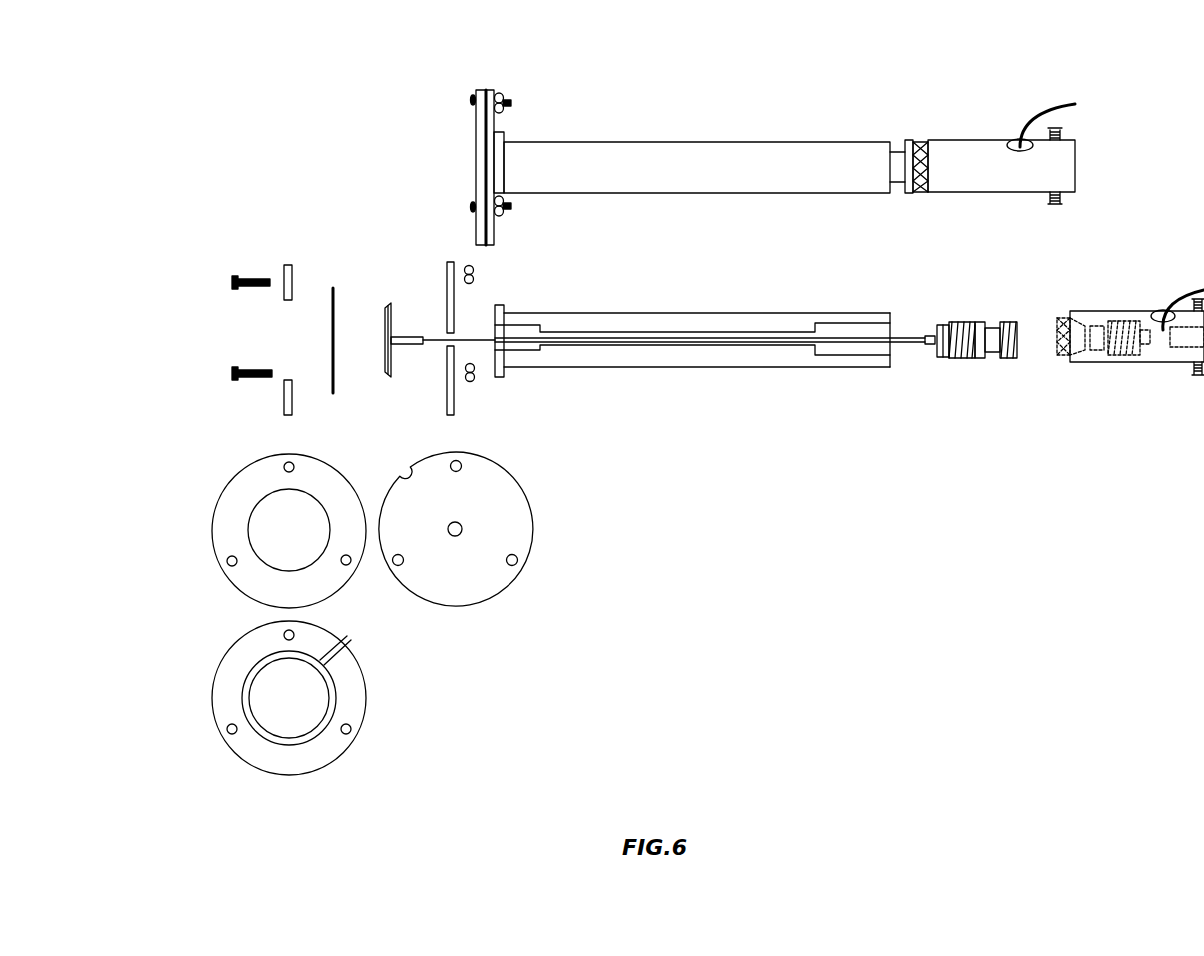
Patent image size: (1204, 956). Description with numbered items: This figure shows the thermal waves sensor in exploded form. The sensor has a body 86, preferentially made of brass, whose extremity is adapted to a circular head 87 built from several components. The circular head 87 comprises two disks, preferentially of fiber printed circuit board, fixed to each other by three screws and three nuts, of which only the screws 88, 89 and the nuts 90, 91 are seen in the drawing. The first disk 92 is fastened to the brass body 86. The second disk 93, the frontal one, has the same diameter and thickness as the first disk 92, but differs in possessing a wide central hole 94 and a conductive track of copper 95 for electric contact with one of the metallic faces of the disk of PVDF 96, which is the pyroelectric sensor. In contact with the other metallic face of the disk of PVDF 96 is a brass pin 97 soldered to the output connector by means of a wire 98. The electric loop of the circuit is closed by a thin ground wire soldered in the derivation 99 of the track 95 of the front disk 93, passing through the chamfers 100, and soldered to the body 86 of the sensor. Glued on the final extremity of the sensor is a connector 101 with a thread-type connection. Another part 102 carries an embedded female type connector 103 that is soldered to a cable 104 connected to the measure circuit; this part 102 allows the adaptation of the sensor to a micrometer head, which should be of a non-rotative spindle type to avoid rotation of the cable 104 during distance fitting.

The body 86 is at (660, 134).
The circular head 87 is at (470, 82).
The screw 88 is at (235, 275).
The screw 89 is at (237, 393).
The nut 90 is at (483, 277).
The nut 91 is at (483, 383).
The first disk 92 is at (440, 270).
The second disk 93 is at (283, 255).
The central hole 94 is at (272, 690).
The conductive track of copper 95 is at (342, 705).
The disk of PVDF 96 is at (330, 284).
The brass pin 97 is at (383, 303).
The wire 98 is at (907, 366).
The derivation 99 is at (358, 640).
The chamfers 100 is at (404, 466).
The connector 101 is at (980, 368).
The part 102 is at (977, 205).
The female type connector 103 is at (1108, 316).
The cable 104 is at (1040, 100).